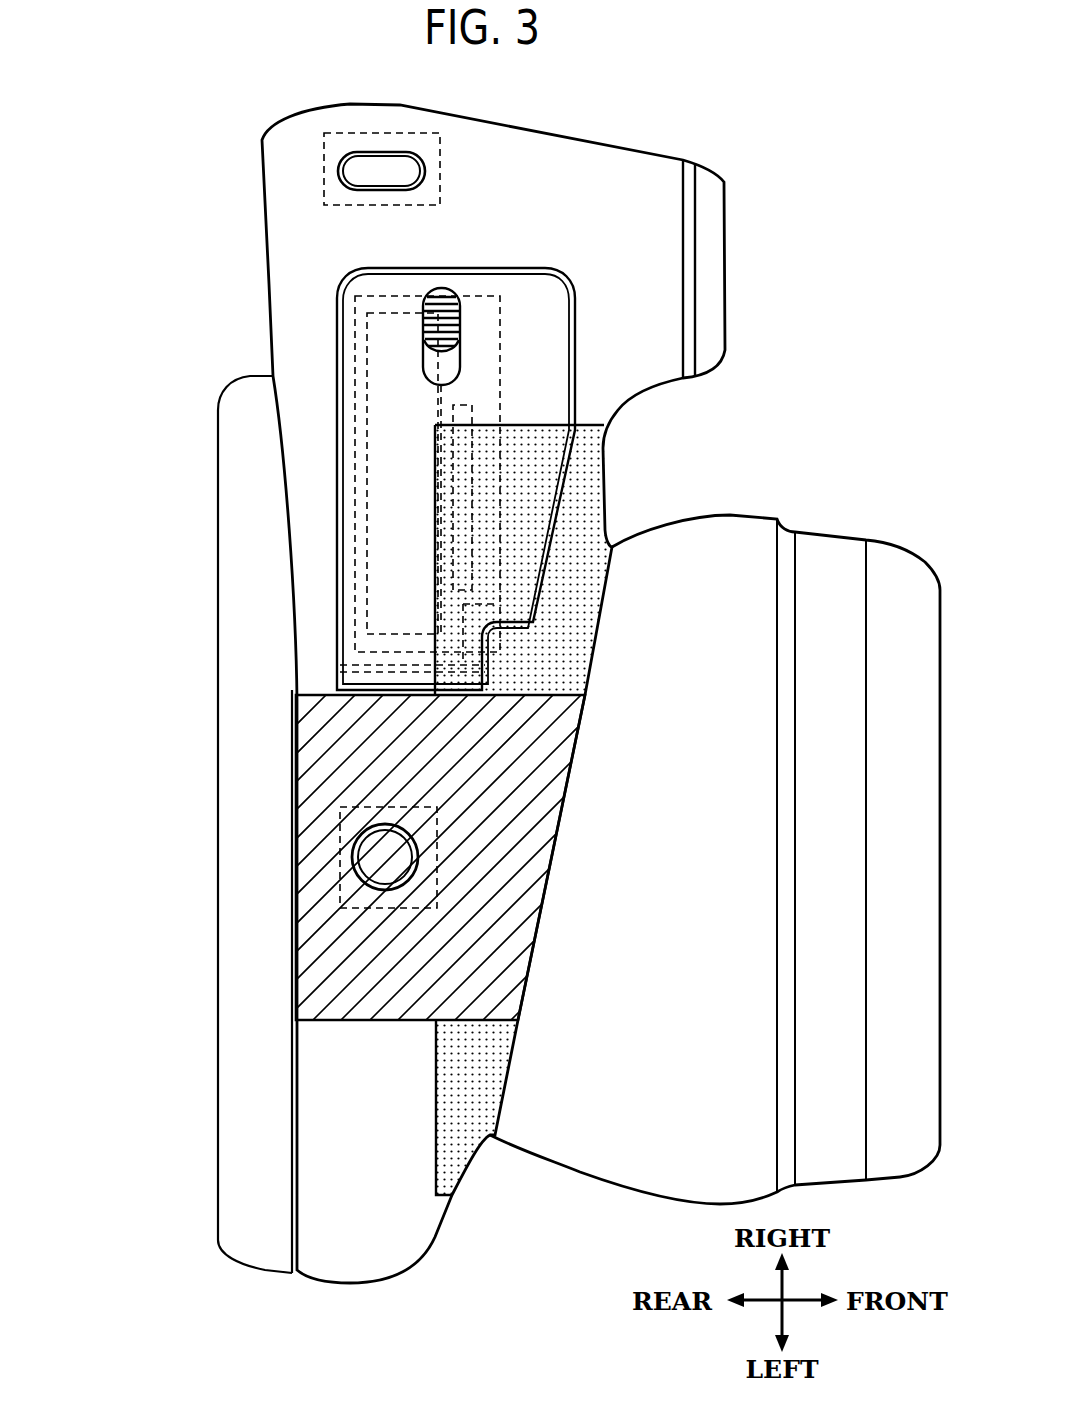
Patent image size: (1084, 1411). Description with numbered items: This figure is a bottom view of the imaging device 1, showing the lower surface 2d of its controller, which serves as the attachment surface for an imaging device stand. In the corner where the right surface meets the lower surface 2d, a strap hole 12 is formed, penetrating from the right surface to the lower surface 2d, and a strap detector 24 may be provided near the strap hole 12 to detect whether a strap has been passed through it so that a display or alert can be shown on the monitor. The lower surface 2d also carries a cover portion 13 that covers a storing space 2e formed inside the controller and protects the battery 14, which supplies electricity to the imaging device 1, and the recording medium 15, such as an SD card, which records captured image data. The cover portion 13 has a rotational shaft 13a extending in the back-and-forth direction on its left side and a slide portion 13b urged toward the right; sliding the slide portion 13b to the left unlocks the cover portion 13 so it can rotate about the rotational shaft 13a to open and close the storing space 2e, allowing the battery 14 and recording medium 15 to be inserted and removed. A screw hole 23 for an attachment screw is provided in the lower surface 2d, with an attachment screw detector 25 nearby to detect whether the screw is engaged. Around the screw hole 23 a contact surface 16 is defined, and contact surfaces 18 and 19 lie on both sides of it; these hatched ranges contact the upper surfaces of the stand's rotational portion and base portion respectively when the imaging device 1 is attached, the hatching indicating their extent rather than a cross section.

The imaging device 1 is at (96, 107).
The lower surface 2d is at (615, 190).
The storing space 2e is at (500, 357).
The strap hole 12 is at (388, 160).
The cover portion 13 is at (340, 332).
The rotational shaft 13a is at (393, 672).
The slide portion 13b is at (440, 356).
The battery 14 is at (365, 562).
The recording medium 15 is at (477, 473).
The contact surface 16 is at (378, 968).
The contact surface 18 is at (460, 1110).
The contact surface 19 is at (583, 550).
The screw hole 23 is at (376, 852).
The strap detector 24 is at (323, 152).
The attachment screw detector 25 is at (340, 850).